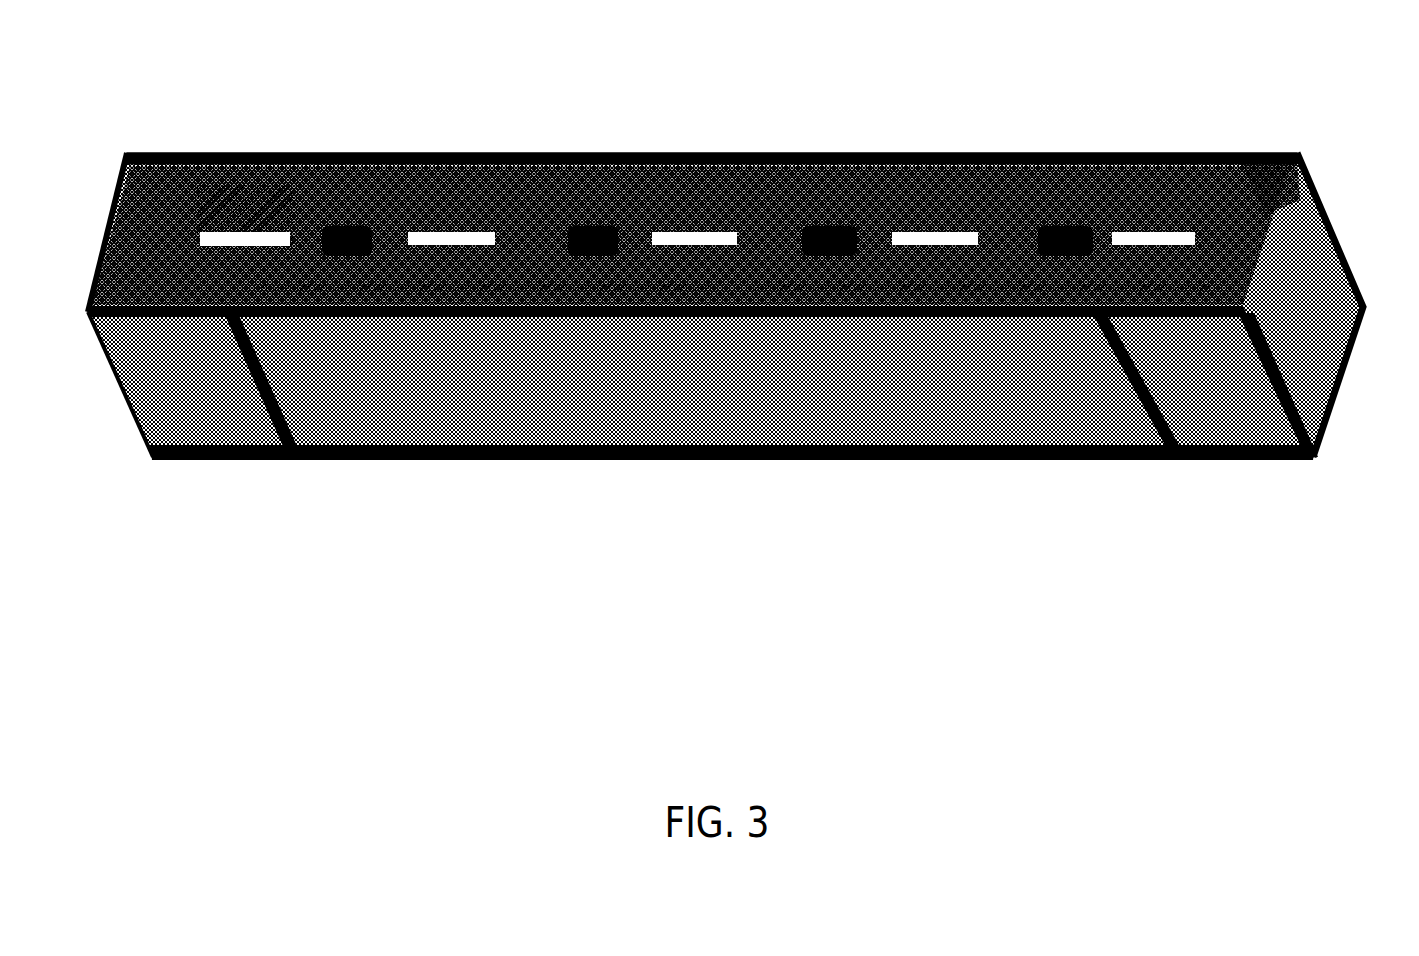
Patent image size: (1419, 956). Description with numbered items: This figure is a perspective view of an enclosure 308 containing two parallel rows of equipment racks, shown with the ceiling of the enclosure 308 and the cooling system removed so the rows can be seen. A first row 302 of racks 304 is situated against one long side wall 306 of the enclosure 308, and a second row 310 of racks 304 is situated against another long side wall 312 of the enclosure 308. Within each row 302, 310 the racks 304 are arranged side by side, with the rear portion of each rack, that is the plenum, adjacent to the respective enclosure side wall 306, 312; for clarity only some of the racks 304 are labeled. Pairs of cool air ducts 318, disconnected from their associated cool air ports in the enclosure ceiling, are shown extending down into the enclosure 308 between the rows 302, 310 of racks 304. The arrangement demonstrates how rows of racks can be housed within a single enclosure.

The first row 302 is at (285, 198).
The racks 304 is at (478, 205).
The long side wall 306 is at (695, 160).
The enclosure 308 is at (1350, 158).
The second row 310 is at (260, 295).
The long side wall 312 is at (723, 305).
The cool air ducts 318 is at (362, 232).